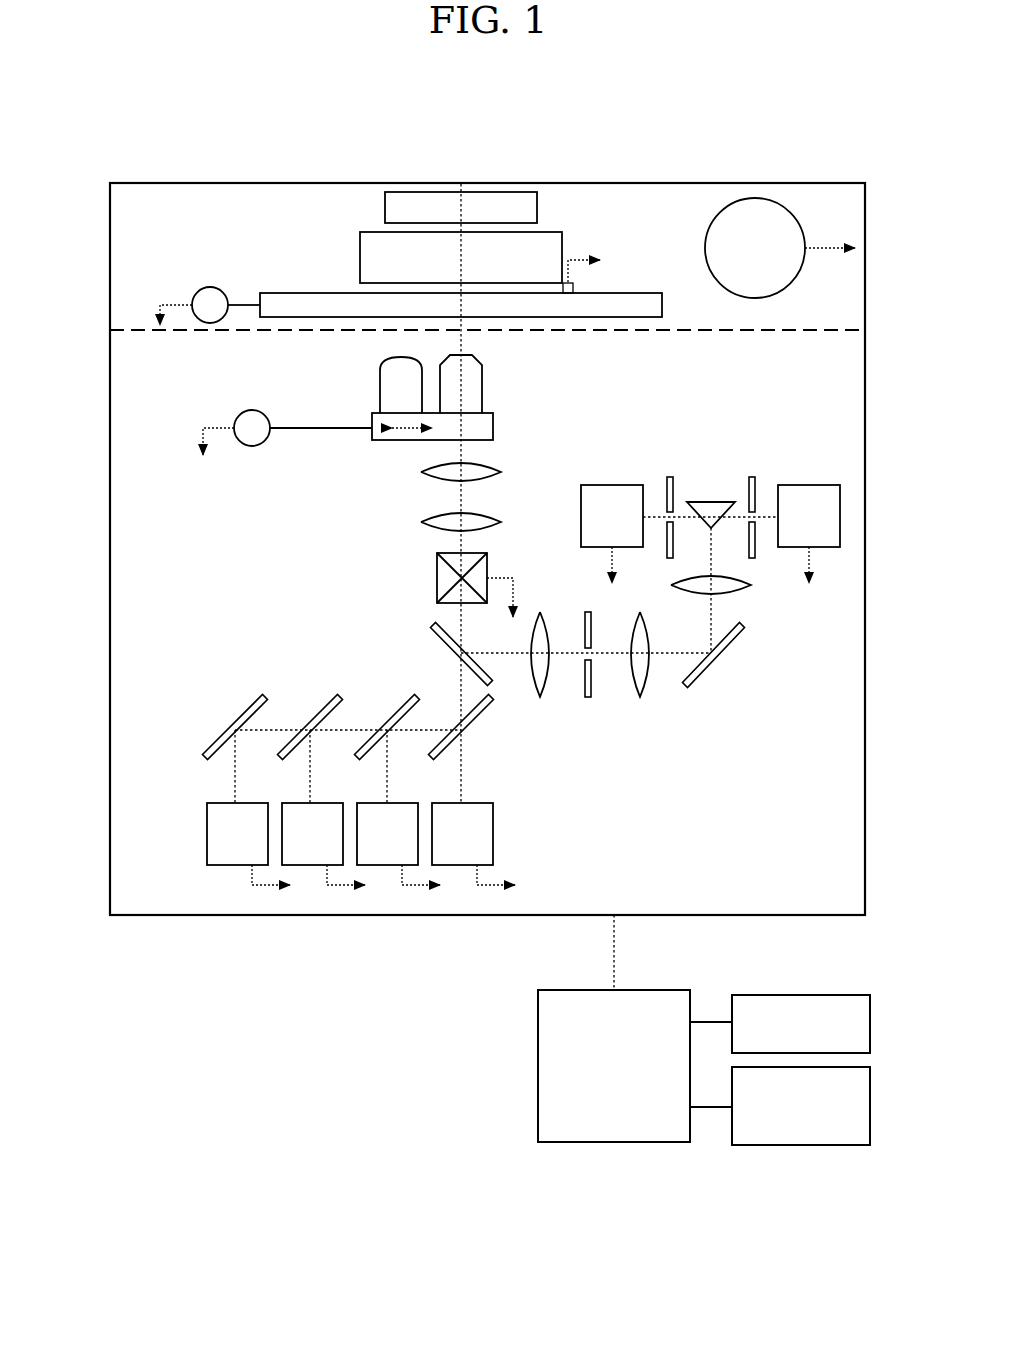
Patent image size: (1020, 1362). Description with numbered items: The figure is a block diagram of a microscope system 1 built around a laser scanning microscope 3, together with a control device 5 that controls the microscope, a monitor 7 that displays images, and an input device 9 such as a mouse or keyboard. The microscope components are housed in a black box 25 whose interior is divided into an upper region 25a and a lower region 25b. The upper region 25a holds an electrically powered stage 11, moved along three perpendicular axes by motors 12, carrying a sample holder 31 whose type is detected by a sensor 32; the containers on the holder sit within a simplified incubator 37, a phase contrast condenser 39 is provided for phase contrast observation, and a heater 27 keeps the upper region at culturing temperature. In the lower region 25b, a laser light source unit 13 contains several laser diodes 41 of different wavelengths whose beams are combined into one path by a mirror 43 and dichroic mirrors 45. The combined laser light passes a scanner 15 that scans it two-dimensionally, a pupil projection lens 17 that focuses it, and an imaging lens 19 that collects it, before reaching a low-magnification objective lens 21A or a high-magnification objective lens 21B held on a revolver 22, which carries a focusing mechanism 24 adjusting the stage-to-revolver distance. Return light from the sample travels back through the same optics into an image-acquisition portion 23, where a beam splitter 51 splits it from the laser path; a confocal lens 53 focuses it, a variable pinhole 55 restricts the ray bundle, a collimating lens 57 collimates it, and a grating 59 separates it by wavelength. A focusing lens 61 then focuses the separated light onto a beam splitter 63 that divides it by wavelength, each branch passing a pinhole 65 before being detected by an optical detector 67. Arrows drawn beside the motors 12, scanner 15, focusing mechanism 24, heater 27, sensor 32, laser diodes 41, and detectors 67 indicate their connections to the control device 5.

The microscope system 1 is at (668, 146).
The laser scanning microscope 3 is at (431, 940).
The control device 5 is at (538, 1058).
The monitor 7 is at (790, 994).
The input device 9 is at (795, 1146).
The electrically powered stage 11 is at (648, 292).
The motor 12 is at (210, 287).
The laser light source unit 13 is at (522, 790).
The scanner 15 is at (437, 578).
The pupil projection lens 17 is at (421, 523).
The imaging lens 19 is at (421, 473).
The low-magnification objective lens 21A is at (380, 377).
The high-magnification objective lens 21B is at (482, 383).
The revolver 22 is at (494, 428).
The image-acquisition portion 23 is at (727, 700).
The focusing mechanism 24 is at (252, 447).
The black box 25 is at (867, 658).
The upper region 25a is at (145, 241).
The lower region 25b is at (145, 466).
The heater 27 is at (708, 228).
The sample holder 31 is at (358, 298).
The sensor 32 is at (576, 290).
The simplified incubator 37 is at (360, 242).
The phase contrast condenser 39 is at (462, 191).
The laser diode 41 is at (240, 866).
The mirror 43 is at (238, 702).
The dichroic mirror 45 is at (312, 702).
The beam splitter 51 is at (433, 626).
The confocal lens 53 is at (540, 611).
The variable pinhole 55 is at (588, 698).
The collimating lens 57 is at (640, 698).
The grating 59 is at (730, 654).
The focusing lens 61 is at (745, 595).
The beam splitter 63 is at (711, 501).
The pinhole 65 is at (670, 476).
The optical detector 67 is at (612, 484).